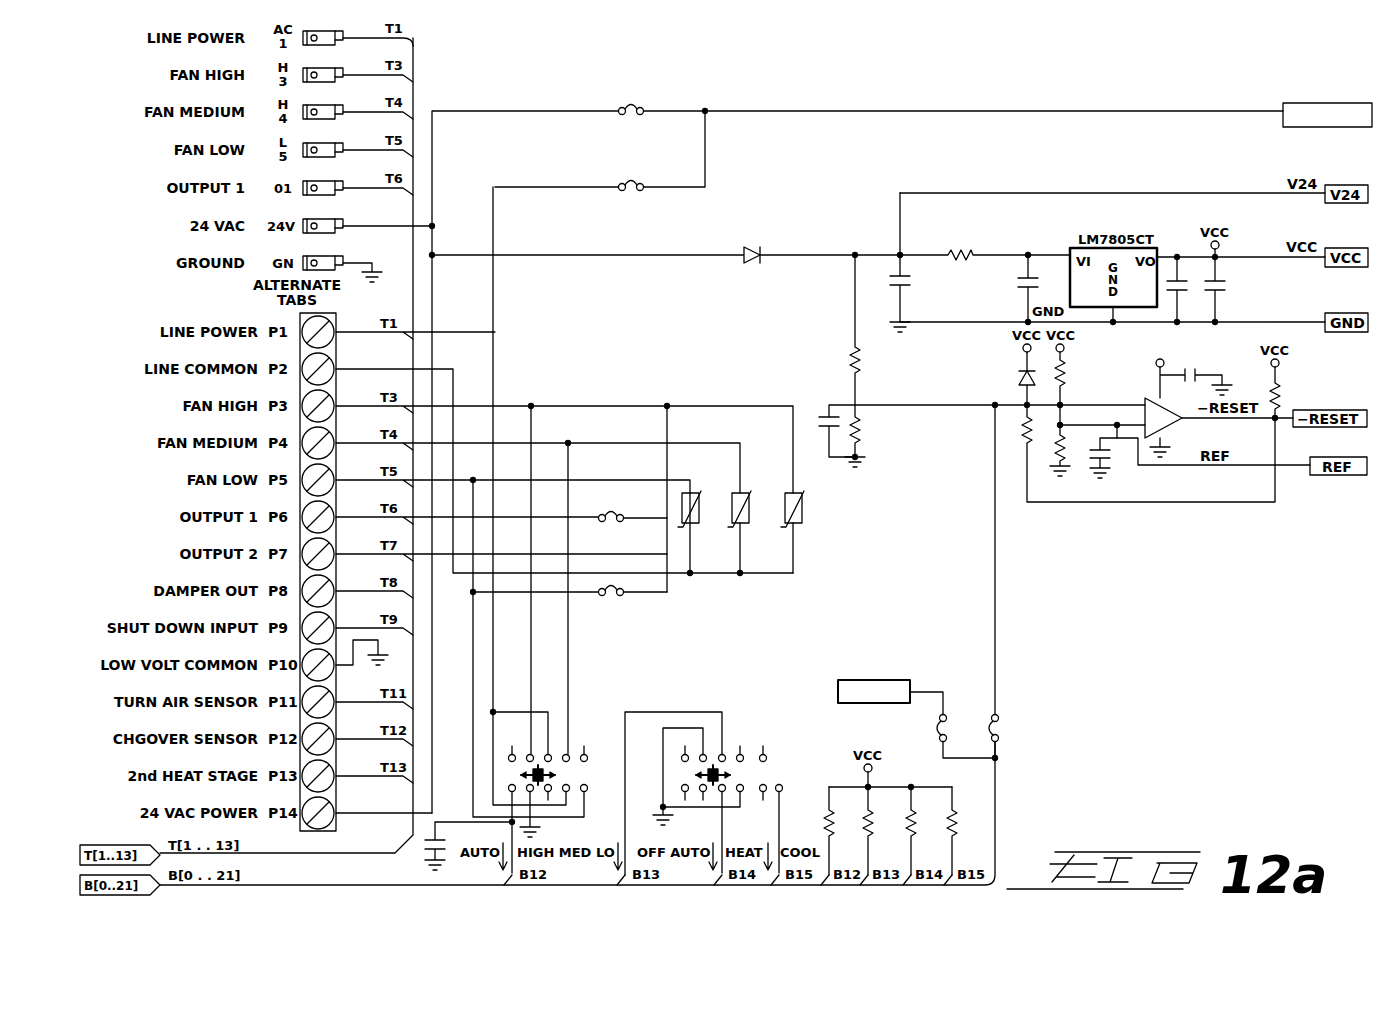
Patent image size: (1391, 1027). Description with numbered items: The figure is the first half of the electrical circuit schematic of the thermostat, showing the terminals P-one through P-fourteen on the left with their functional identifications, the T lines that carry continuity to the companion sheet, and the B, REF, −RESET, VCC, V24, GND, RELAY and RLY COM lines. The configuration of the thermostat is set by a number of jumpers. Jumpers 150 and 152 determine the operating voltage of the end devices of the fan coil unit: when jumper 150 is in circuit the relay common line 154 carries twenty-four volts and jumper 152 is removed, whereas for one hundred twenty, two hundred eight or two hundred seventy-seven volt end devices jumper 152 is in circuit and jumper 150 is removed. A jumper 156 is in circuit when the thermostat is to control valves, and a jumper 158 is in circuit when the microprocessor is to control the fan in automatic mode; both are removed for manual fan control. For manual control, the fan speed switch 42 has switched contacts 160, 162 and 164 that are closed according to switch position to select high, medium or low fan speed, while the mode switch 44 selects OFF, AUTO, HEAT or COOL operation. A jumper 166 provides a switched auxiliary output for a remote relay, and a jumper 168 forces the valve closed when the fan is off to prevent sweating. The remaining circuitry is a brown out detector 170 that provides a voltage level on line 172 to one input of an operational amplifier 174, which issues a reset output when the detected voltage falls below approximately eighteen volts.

The fan speed control switch 42 is at (580, 722).
The mode switch 44 is at (740, 740).
The jumper 150 is at (641, 104).
The jumper 152 is at (641, 180).
The relay common line 154 is at (1119, 111).
The jumper 156 is at (634, 503).
The jumper 158 is at (612, 597).
The switched contact 160 is at (700, 492).
The switched contact 162 is at (750, 492).
The switched contact 164 is at (803, 492).
The jumper 166 is at (934, 727).
The jumper 168 is at (1026, 718).
The brown out detector 170 is at (868, 394).
The line 172 is at (937, 407).
The operational amplifier 174 is at (1144, 396).